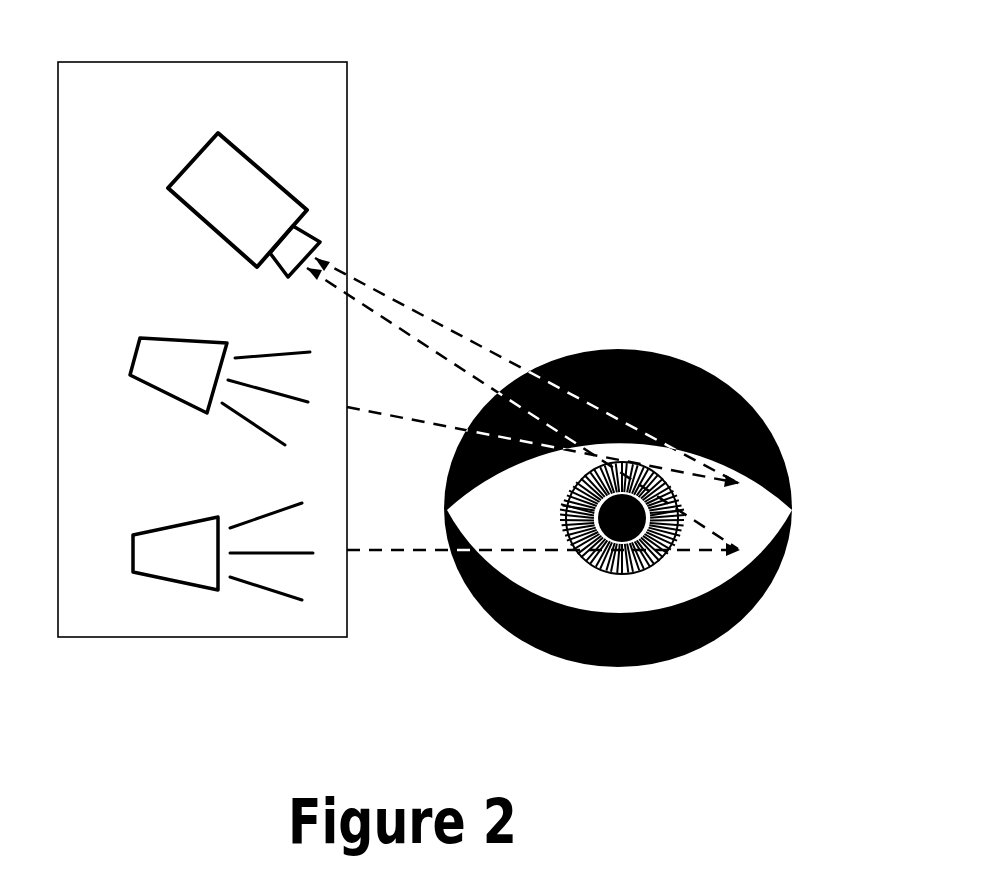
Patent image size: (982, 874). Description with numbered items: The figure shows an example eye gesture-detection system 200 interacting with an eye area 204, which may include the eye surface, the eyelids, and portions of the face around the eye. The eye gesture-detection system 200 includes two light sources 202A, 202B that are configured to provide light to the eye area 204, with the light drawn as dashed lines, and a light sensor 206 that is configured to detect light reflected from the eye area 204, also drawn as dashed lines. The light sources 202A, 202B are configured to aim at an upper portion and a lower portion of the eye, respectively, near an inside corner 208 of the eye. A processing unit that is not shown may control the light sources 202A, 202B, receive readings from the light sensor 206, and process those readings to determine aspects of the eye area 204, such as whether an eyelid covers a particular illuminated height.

The eye gesture-detection system 200 is at (125, 60).
The light source 202A is at (195, 338).
The light source 202B is at (180, 520).
The eye area 204 is at (653, 455).
The light sensor 206 is at (205, 147).
The inside corner 208 is at (795, 511).